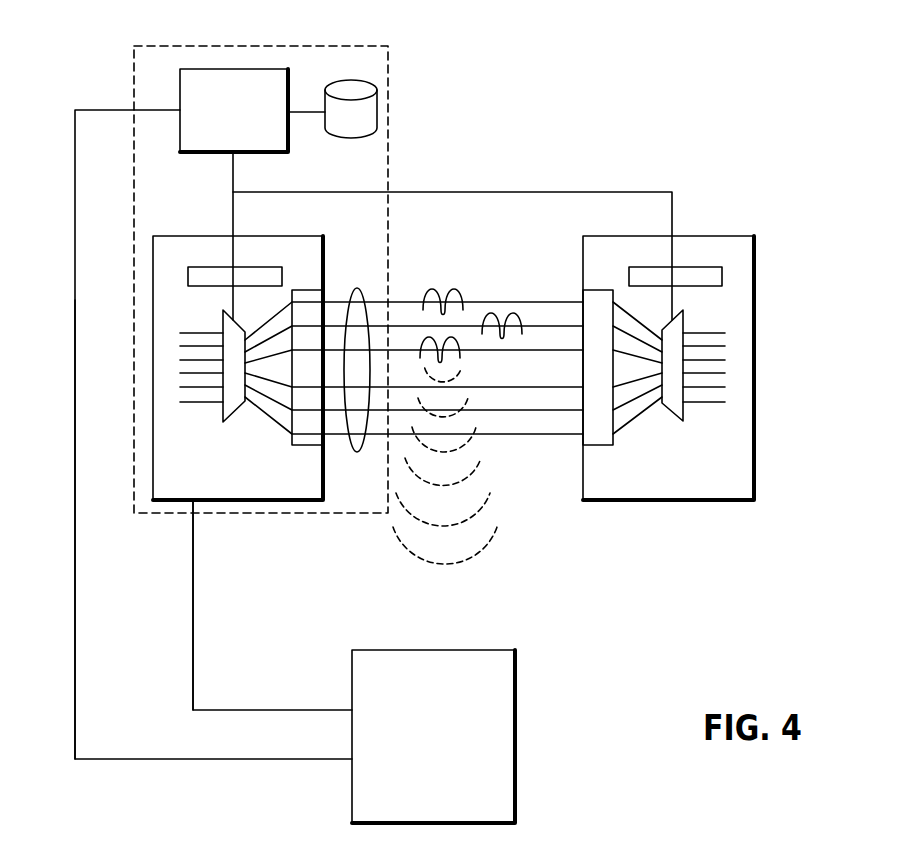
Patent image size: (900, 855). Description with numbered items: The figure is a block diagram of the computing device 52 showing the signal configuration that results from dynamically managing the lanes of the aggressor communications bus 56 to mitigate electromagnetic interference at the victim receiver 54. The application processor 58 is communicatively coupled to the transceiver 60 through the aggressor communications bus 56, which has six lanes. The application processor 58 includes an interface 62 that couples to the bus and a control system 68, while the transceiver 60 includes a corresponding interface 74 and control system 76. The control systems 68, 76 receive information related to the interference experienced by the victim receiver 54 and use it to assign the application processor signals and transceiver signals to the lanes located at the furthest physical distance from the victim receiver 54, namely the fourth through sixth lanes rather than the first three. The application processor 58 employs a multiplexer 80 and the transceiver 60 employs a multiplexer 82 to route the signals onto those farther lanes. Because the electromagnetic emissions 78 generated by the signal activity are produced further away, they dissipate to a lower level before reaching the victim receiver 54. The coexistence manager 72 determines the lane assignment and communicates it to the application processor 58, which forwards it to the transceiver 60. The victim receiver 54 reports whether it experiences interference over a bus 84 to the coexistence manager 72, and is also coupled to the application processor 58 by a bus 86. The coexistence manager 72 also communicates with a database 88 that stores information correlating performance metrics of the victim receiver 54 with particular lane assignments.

The computing device 52 is at (712, 98).
The victim receiver 54 is at (515, 738).
The aggressor communications bus 56 is at (358, 290).
The application processor 58 is at (175, 236).
The transceiver 60 is at (754, 363).
The interface 62 is at (300, 445).
The control system 68 is at (188, 281).
The coexistence manager 72 is at (180, 90).
The interface 74 is at (601, 445).
The control system 76 is at (722, 272).
The electromagnetic emissions 78 is at (443, 565).
The multiplexer 80 is at (236, 412).
The multiplexer 82 is at (680, 421).
The bus 84 is at (75, 580).
The bus 86 is at (193, 608).
The database 88 is at (377, 108).